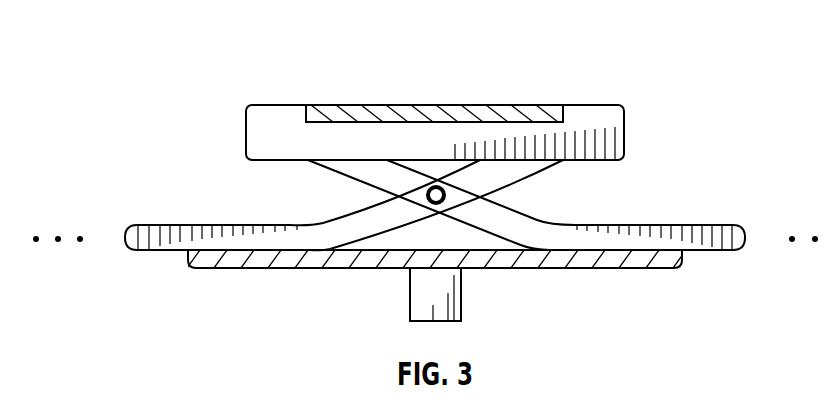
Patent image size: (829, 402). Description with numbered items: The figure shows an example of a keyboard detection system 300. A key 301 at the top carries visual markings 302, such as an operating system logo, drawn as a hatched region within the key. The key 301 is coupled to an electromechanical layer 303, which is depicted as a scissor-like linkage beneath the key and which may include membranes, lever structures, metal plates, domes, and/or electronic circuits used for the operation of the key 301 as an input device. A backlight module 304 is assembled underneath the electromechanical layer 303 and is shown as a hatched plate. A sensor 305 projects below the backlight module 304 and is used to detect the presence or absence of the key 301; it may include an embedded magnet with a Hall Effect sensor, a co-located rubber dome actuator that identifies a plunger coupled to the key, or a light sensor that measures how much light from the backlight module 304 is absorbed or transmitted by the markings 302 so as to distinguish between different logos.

The keyboard detection system 300 is at (596, 36).
The key 301 is at (625, 133).
The visual markings 302 is at (463, 105).
The electromechanical layer 303 is at (498, 210).
The backlight module 304 is at (630, 262).
The sensor 305 is at (461, 290).